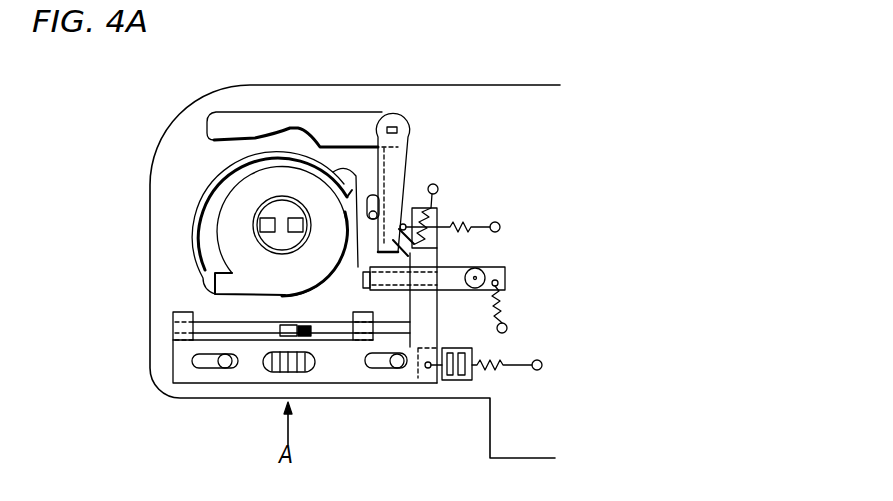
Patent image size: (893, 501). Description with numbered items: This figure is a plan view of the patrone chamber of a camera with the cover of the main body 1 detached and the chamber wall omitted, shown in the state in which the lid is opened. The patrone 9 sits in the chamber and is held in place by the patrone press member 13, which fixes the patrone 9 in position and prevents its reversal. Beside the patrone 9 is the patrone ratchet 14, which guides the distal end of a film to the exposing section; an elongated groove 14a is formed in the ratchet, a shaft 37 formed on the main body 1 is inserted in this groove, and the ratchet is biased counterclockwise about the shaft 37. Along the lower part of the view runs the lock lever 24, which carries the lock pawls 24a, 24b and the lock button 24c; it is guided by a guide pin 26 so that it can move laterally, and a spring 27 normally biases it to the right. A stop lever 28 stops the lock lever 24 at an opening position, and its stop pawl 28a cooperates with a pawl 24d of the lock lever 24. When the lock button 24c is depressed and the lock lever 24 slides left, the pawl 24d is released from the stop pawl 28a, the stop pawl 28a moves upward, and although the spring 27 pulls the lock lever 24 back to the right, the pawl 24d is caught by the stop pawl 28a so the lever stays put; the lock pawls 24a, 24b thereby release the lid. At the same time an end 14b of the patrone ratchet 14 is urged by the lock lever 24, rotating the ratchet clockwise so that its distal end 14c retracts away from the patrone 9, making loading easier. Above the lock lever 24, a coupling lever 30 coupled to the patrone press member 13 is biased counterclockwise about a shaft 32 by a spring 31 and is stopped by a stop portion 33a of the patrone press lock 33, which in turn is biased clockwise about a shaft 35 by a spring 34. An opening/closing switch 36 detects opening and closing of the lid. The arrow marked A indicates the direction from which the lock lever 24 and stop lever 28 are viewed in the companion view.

The main body 1 is at (496, 84).
The patrone 9 is at (232, 207).
The patrone press member 13 is at (229, 122).
The patrone ratchet 14 is at (408, 142).
The elongated groove 14a is at (369, 195).
The end of patrone ratchet 14b is at (413, 253).
The distal end of patrone ratchet 14c is at (362, 125).
The lock lever 24 is at (247, 372).
The lock pawl 24a is at (178, 322).
The lock pawl 24b is at (415, 357).
The lock button 24c is at (296, 373).
The pawl 24d is at (297, 323).
The guide pin 26 is at (212, 370).
The spring 27 is at (490, 362).
The stop lever 28 is at (240, 322).
The stop pawl 28a is at (293, 327).
The coupling lever 30 is at (368, 172).
The spring 31 is at (463, 220).
The shaft 32 is at (397, 118).
The patrone press lock 33 is at (458, 270).
The stop portion 33a is at (412, 206).
The spring 34 is at (507, 305).
The shaft 35 is at (497, 275).
The opening/closing switch 36 is at (473, 380).
The shaft 37 is at (372, 213).